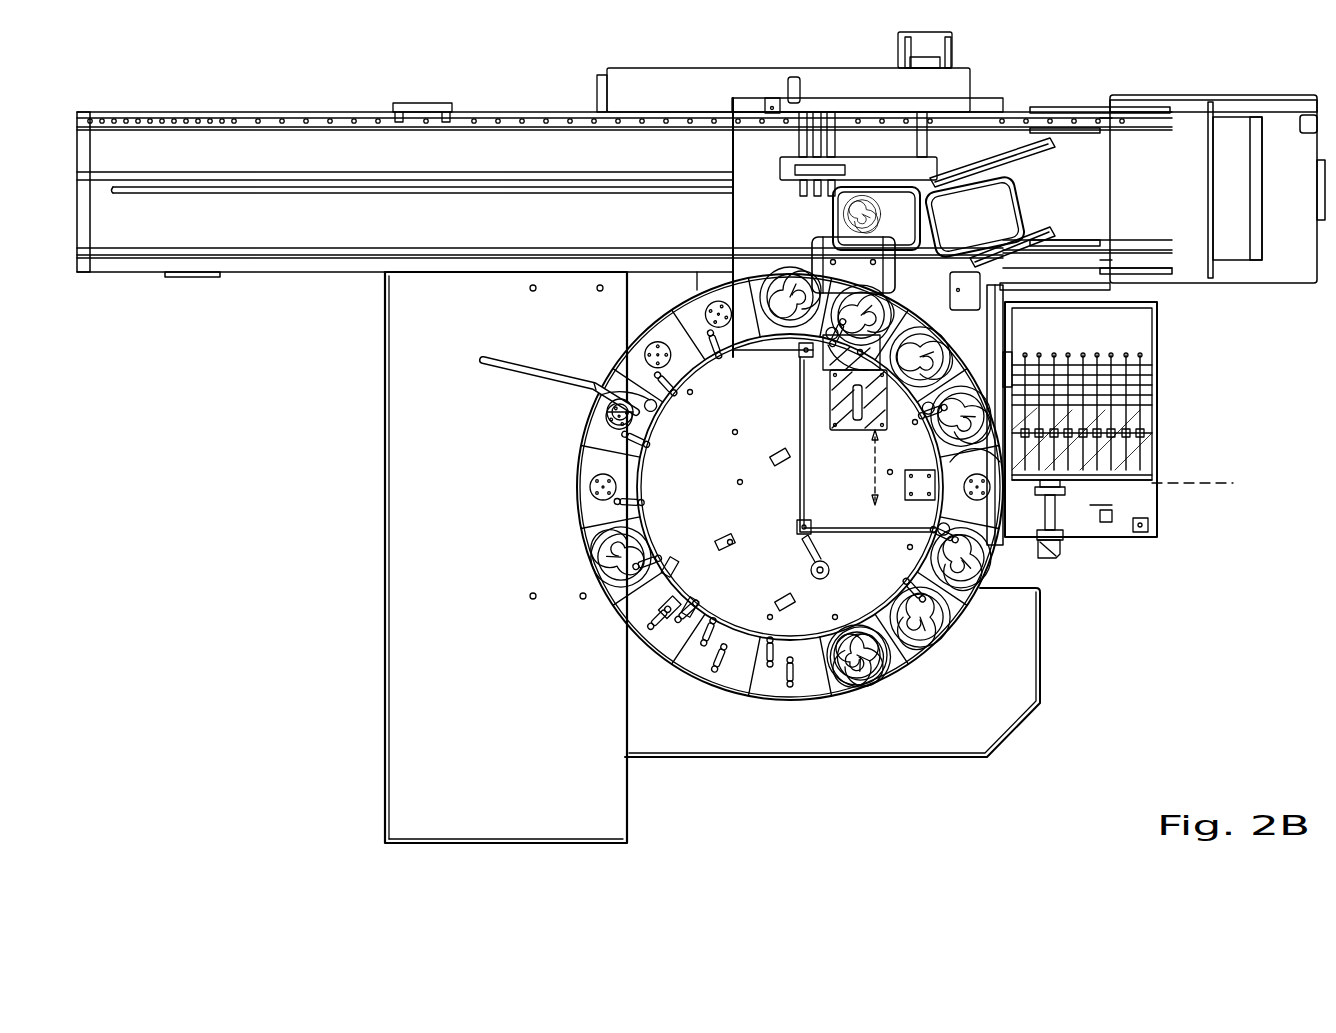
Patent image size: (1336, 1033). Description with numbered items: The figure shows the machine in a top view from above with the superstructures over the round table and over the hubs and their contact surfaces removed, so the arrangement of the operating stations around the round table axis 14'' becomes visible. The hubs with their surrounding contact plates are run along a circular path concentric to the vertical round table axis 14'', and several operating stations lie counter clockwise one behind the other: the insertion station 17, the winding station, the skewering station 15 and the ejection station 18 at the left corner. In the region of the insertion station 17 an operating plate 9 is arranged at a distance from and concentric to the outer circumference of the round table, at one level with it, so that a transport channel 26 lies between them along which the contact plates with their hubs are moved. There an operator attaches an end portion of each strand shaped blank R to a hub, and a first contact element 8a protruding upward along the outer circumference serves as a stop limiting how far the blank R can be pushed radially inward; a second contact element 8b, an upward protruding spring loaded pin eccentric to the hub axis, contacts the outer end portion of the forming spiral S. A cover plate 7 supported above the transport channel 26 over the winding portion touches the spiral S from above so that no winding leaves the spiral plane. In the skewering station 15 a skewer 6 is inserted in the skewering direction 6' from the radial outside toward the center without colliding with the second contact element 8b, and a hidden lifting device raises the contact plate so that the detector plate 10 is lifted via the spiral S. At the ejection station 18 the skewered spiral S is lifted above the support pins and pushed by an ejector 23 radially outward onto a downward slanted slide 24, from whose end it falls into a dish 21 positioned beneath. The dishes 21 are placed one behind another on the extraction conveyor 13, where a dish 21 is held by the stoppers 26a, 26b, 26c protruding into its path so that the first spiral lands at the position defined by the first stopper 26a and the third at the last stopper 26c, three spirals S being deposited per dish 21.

The extraction conveyor 13 is at (345, 220).
The insertion station 17 is at (478, 309).
The operating plate 9 is at (541, 557).
The strand shaped blank R is at (540, 378).
The first contact element 8a is at (650, 400).
The second contact element 8b is at (588, 413).
The ejection station 18 is at (824, 438).
The round table axis 14'' is at (787, 481).
The ejector 23 is at (882, 390).
The first stopper 26a is at (830, 190).
The stopper 26b is at (812, 190).
The last stopper 26c is at (800, 190).
The spiral S is at (861, 200).
The dish 21 is at (929, 216).
The slide 24 is at (853, 265).
The skewer 6 is at (1082, 464).
The skewering direction 6' is at (1192, 463).
The skewering station 15 is at (1185, 509).
The transport channel 26 is at (952, 620).
The cover plate 7 is at (703, 650).
The detector plate 10 is at (672, 690).